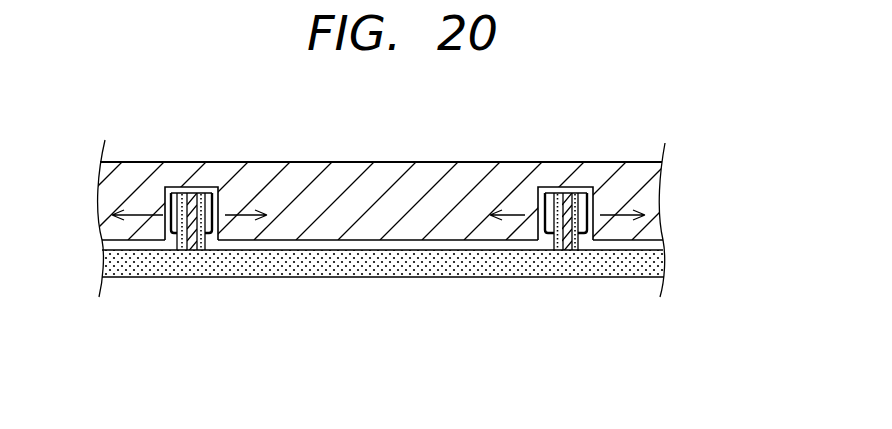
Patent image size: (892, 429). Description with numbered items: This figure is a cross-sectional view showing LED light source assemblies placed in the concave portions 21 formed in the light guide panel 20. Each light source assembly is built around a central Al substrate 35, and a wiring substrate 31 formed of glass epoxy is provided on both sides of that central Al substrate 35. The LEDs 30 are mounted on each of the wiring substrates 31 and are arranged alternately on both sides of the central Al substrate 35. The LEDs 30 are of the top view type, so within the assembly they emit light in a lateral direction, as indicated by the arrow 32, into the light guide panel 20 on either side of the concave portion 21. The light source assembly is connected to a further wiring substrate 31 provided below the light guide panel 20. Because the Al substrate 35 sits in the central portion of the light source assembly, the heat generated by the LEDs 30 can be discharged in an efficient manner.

The light guide panel 20 is at (650, 190).
The concave portion 21 is at (577, 190).
The LED 30 is at (550, 193).
The wiring substrate 31 is at (408, 278).
The arrow 32 is at (237, 213).
The Al substrate 35 is at (565, 245).